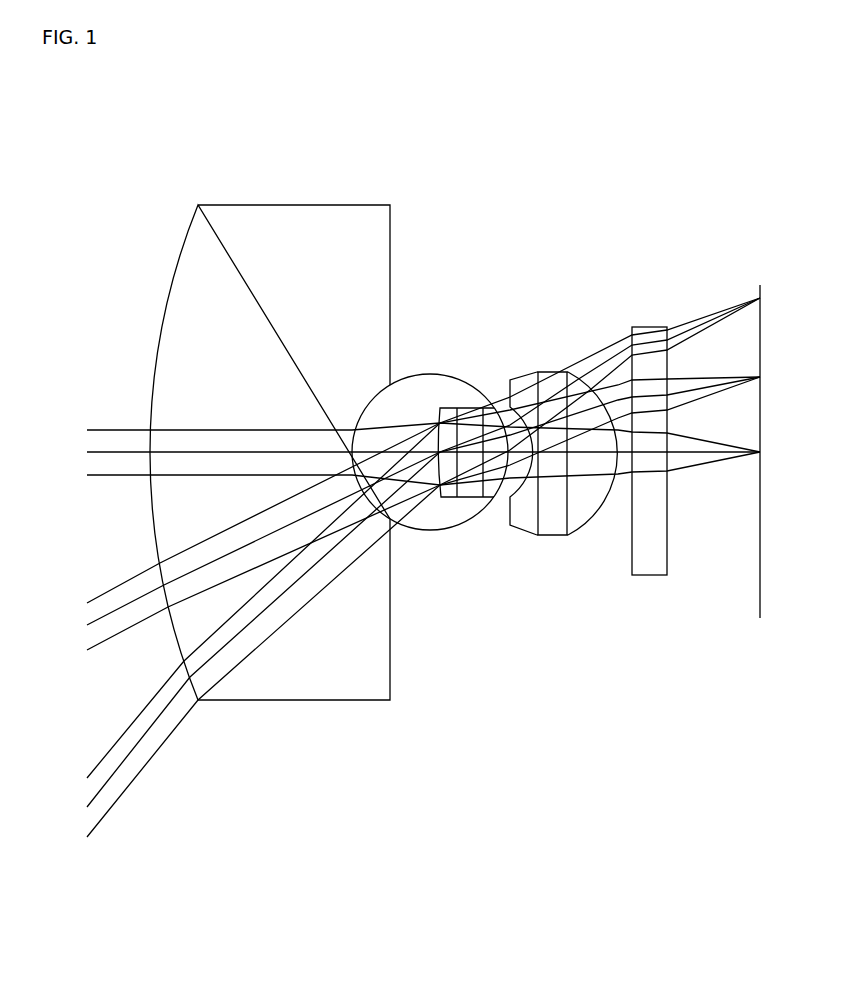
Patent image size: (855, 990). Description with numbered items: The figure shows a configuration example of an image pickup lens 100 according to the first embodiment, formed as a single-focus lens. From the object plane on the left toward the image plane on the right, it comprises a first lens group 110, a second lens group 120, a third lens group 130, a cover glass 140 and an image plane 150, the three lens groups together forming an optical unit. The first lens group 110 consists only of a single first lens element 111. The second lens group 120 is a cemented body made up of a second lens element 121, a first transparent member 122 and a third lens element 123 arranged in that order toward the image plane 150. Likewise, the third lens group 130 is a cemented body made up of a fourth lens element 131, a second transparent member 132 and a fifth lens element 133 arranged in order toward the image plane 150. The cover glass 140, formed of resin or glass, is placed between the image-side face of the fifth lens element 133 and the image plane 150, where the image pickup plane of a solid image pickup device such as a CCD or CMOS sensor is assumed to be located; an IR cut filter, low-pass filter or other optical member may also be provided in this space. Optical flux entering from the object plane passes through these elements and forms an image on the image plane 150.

The image pickup lens 100 is at (571, 118).
The first lens group 110 is at (270, 415).
The first lens element 111 is at (287, 220).
The second lens group 120 is at (463, 394).
The second lens element 121 is at (440, 404).
The first transparent member 122 is at (462, 404).
The third lens element 123 is at (500, 413).
The third lens group 130 is at (583, 366).
The fourth lens element 131 is at (527, 374).
The second transparent member 132 is at (550, 371).
The fifth lens element 133 is at (571, 371).
The cover glass 140 is at (649, 576).
The image plane 150 is at (757, 608).